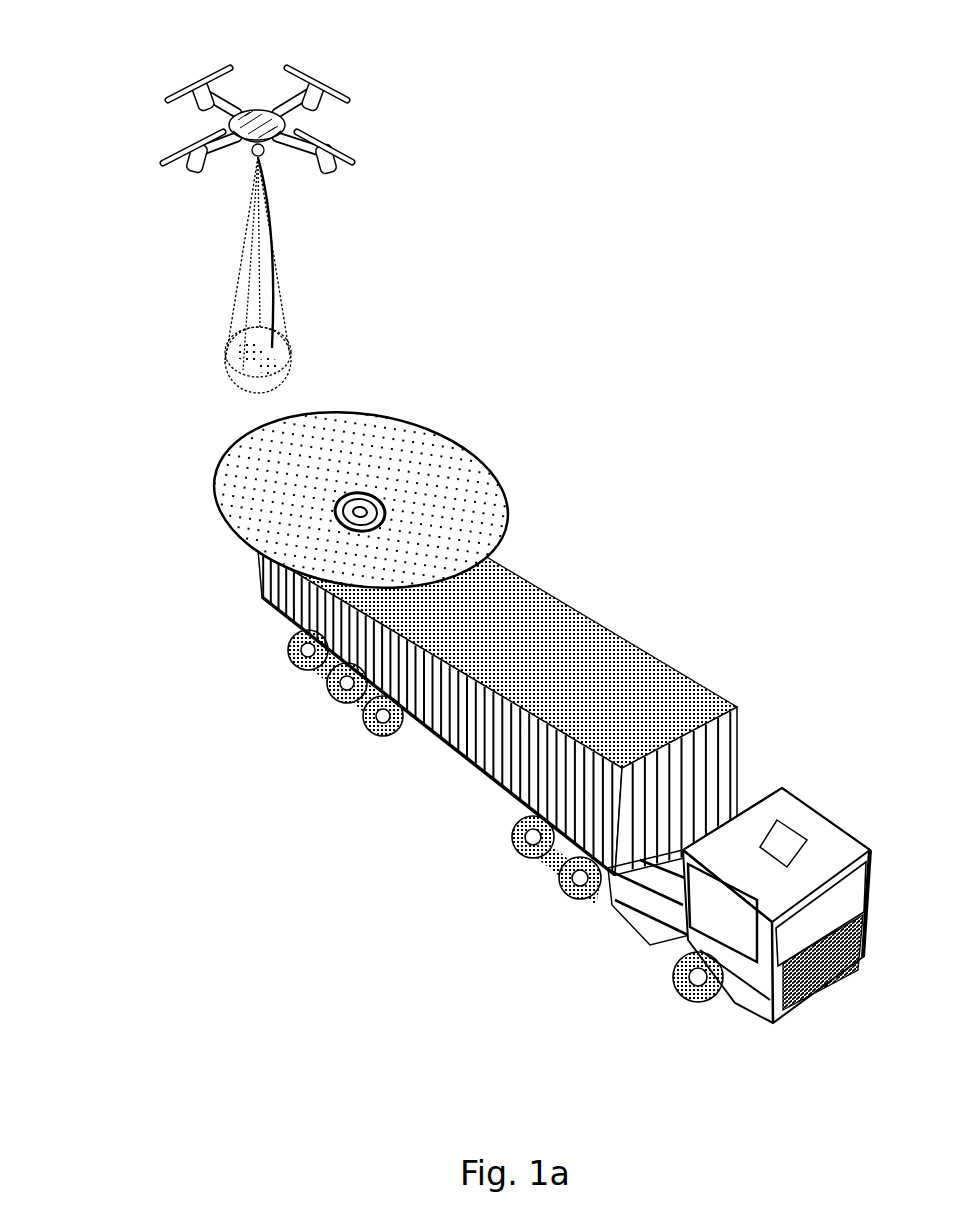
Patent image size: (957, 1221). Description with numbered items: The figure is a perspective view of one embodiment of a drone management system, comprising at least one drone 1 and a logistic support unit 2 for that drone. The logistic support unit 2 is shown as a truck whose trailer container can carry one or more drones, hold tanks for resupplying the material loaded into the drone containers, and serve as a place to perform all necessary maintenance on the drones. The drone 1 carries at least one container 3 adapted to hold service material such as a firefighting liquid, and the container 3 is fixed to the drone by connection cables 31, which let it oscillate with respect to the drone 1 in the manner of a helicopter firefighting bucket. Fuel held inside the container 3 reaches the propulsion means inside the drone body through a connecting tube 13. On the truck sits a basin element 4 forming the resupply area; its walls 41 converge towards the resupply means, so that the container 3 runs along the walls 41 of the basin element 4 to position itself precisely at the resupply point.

The drone 1 is at (257, 115).
The logistic support unit 2 is at (628, 593).
The container 3 is at (273, 357).
The connecting tube 13 is at (269, 289).
The connection cables 31 is at (226, 278).
The basin element 4 is at (317, 495).
The walls 41 is at (245, 480).